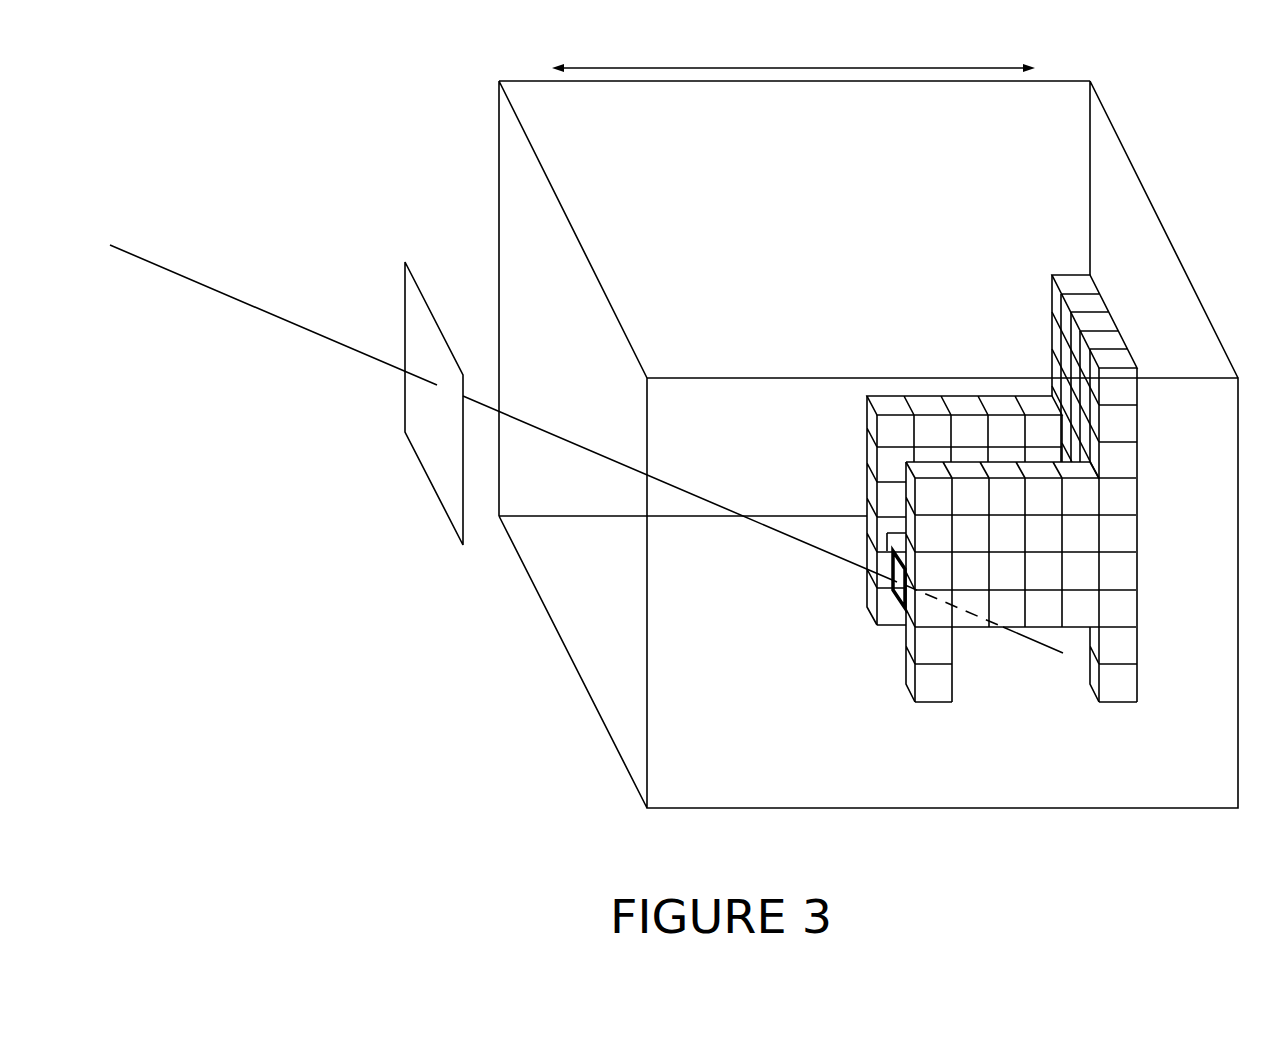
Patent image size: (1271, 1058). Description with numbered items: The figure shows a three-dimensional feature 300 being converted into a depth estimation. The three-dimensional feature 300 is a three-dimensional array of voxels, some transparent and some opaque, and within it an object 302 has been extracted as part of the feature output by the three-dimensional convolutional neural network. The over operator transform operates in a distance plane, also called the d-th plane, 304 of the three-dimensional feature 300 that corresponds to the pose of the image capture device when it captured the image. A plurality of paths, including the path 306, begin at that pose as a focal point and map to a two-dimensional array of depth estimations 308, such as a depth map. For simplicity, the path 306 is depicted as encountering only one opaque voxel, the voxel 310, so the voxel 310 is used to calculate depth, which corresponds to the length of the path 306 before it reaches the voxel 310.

The three-dimensional feature 300 is at (162, 98).
The object 302 is at (1044, 258).
The distance plane (d-th plane) 304 is at (648, 67).
The path 306 is at (308, 330).
The two-dimensional array of depth estimations 308 is at (415, 277).
The voxel 310 is at (892, 578).